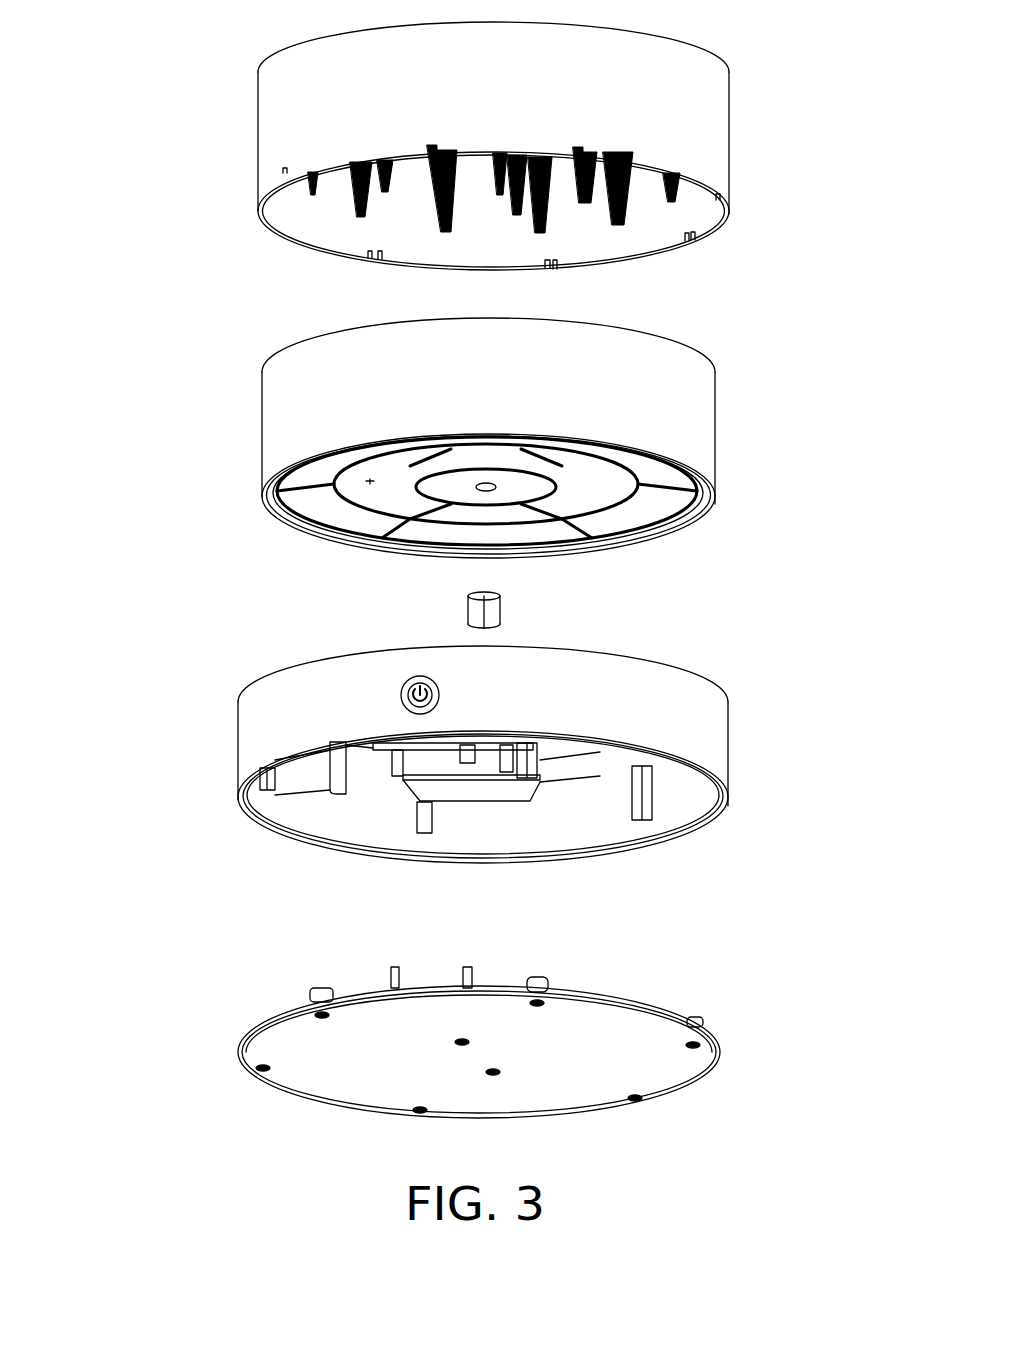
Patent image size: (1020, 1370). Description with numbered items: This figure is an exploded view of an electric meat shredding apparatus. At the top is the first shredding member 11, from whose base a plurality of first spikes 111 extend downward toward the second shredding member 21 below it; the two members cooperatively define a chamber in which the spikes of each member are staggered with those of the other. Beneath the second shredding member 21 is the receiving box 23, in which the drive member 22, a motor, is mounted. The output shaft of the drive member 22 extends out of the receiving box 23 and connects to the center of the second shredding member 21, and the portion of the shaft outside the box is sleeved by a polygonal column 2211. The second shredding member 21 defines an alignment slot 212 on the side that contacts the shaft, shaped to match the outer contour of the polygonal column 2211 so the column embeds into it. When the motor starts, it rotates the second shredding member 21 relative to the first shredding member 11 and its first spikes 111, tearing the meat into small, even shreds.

The first shredding member 11 is at (694, 116).
The first spikes 111 is at (686, 229).
The second shredding member 21 is at (561, 465).
The alignment slot 212 is at (485, 492).
The polygonal column 2211 is at (502, 611).
The drive member 22 is at (243, 800).
The receiving box 23 is at (466, 754).